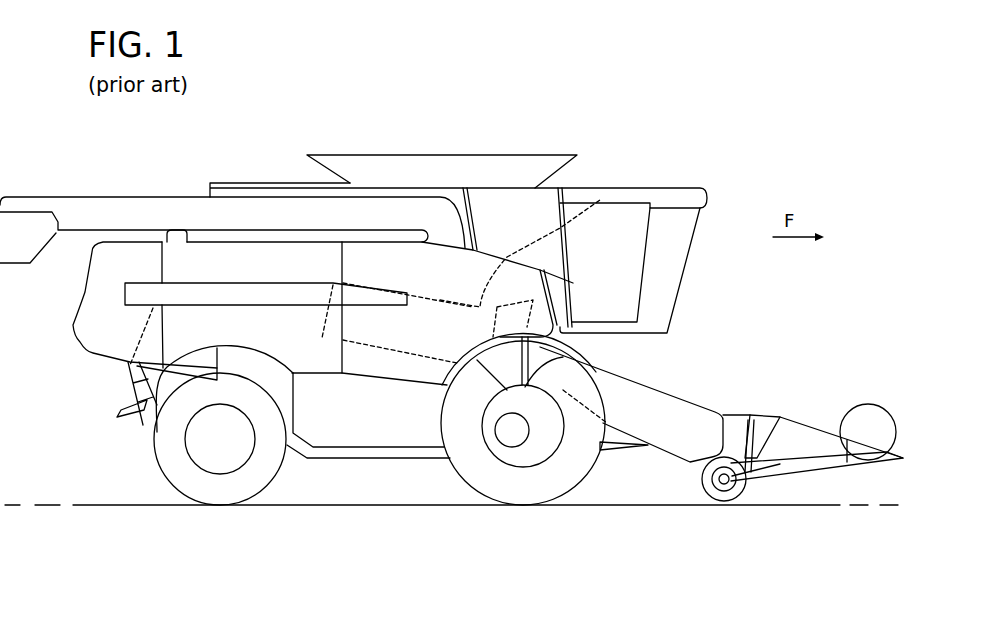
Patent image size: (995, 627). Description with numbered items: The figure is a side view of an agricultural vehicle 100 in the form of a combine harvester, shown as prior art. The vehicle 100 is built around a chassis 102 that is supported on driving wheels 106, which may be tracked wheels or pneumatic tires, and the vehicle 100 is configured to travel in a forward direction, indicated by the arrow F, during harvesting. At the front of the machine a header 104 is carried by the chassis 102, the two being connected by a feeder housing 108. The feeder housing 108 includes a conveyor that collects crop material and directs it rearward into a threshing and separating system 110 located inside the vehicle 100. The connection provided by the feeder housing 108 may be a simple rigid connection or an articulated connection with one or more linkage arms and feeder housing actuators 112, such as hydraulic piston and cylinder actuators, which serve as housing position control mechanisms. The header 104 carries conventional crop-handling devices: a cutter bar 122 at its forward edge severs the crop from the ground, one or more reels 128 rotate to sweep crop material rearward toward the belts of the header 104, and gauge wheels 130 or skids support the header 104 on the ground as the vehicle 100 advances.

The agricultural vehicle 100 is at (694, 105).
The chassis 102 is at (357, 437).
The header 104 is at (794, 396).
The driving wheels 106 is at (227, 490).
The feeder housing 108 is at (672, 398).
The threshing and separating system 110 is at (600, 200).
The feeder housing actuators 112 is at (615, 450).
The cutter bar 122 is at (873, 460).
The reels 128 is at (870, 422).
The gauge wheels 130 is at (727, 486).